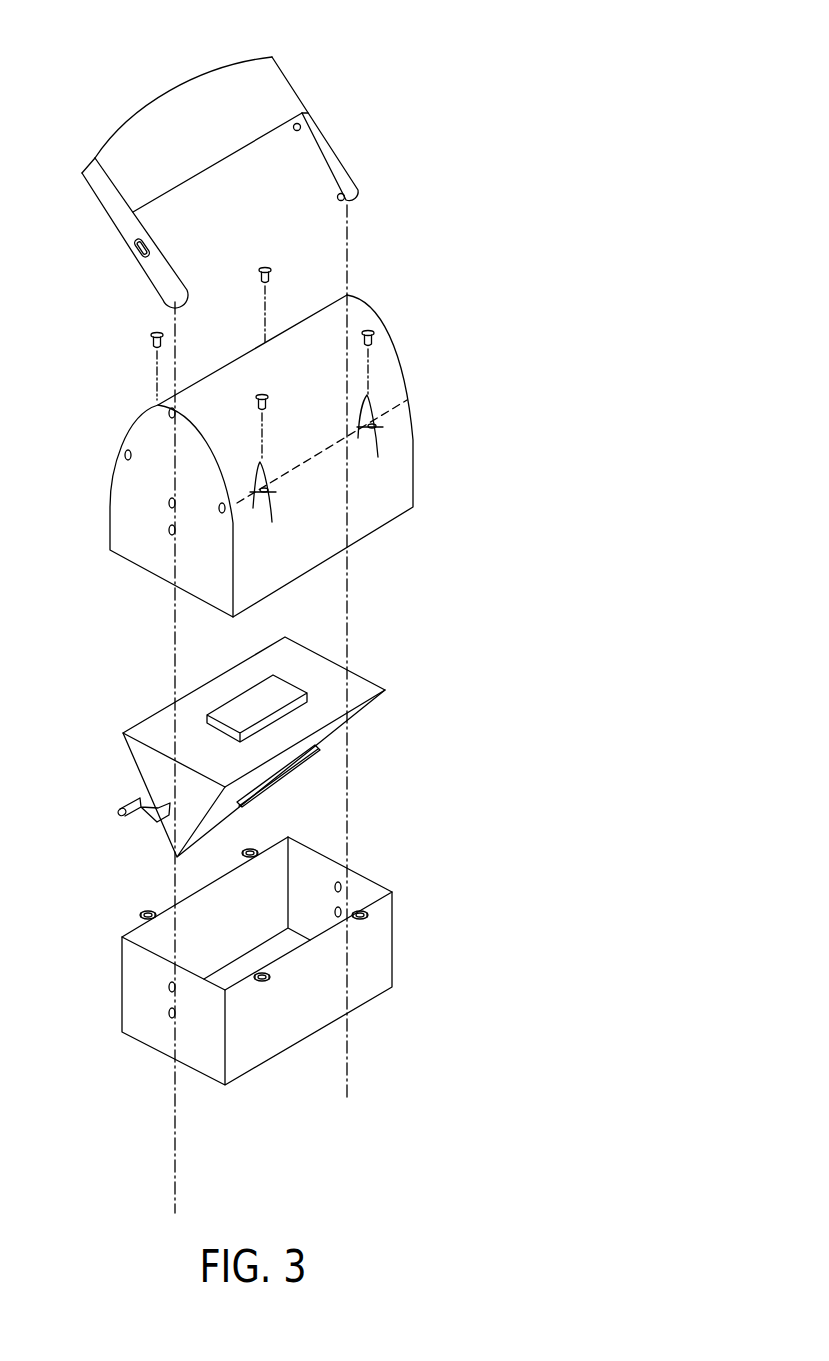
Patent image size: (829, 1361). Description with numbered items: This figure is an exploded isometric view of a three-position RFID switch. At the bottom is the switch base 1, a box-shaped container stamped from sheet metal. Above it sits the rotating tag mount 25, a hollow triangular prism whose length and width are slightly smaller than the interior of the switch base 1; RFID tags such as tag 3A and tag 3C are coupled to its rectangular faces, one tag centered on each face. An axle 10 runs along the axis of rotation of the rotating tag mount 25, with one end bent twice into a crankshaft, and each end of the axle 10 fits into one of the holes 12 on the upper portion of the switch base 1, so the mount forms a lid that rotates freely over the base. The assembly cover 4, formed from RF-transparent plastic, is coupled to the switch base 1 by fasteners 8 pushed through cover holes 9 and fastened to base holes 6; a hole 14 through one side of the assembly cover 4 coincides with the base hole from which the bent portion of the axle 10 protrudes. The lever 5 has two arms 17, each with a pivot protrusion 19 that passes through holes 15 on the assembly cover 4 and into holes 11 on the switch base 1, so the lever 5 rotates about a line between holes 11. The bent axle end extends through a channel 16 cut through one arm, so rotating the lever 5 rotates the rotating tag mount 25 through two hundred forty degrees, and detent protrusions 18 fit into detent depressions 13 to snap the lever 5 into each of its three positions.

The switch base 1 is at (392, 902).
The RFID tag 3A is at (243, 698).
The RFID tag 3C is at (305, 763).
The assembly cover 4 is at (405, 367).
The lever 5 is at (288, 82).
The base holes 6 is at (260, 848).
The fasteners 8 is at (258, 270).
The cover holes 9 is at (380, 423).
The axle 10 is at (130, 803).
The holes 11 is at (343, 910).
The holes 12 is at (343, 884).
The detent depressions 13 is at (146, 397).
The hole 14 is at (167, 503).
The holes 15 is at (167, 530).
The channel 16 is at (110, 245).
The arms 17 is at (330, 137).
The detent protrusions 18 is at (294, 131).
The pivot protrusion 19 is at (338, 205).
The rotating tag mount 25 is at (367, 680).